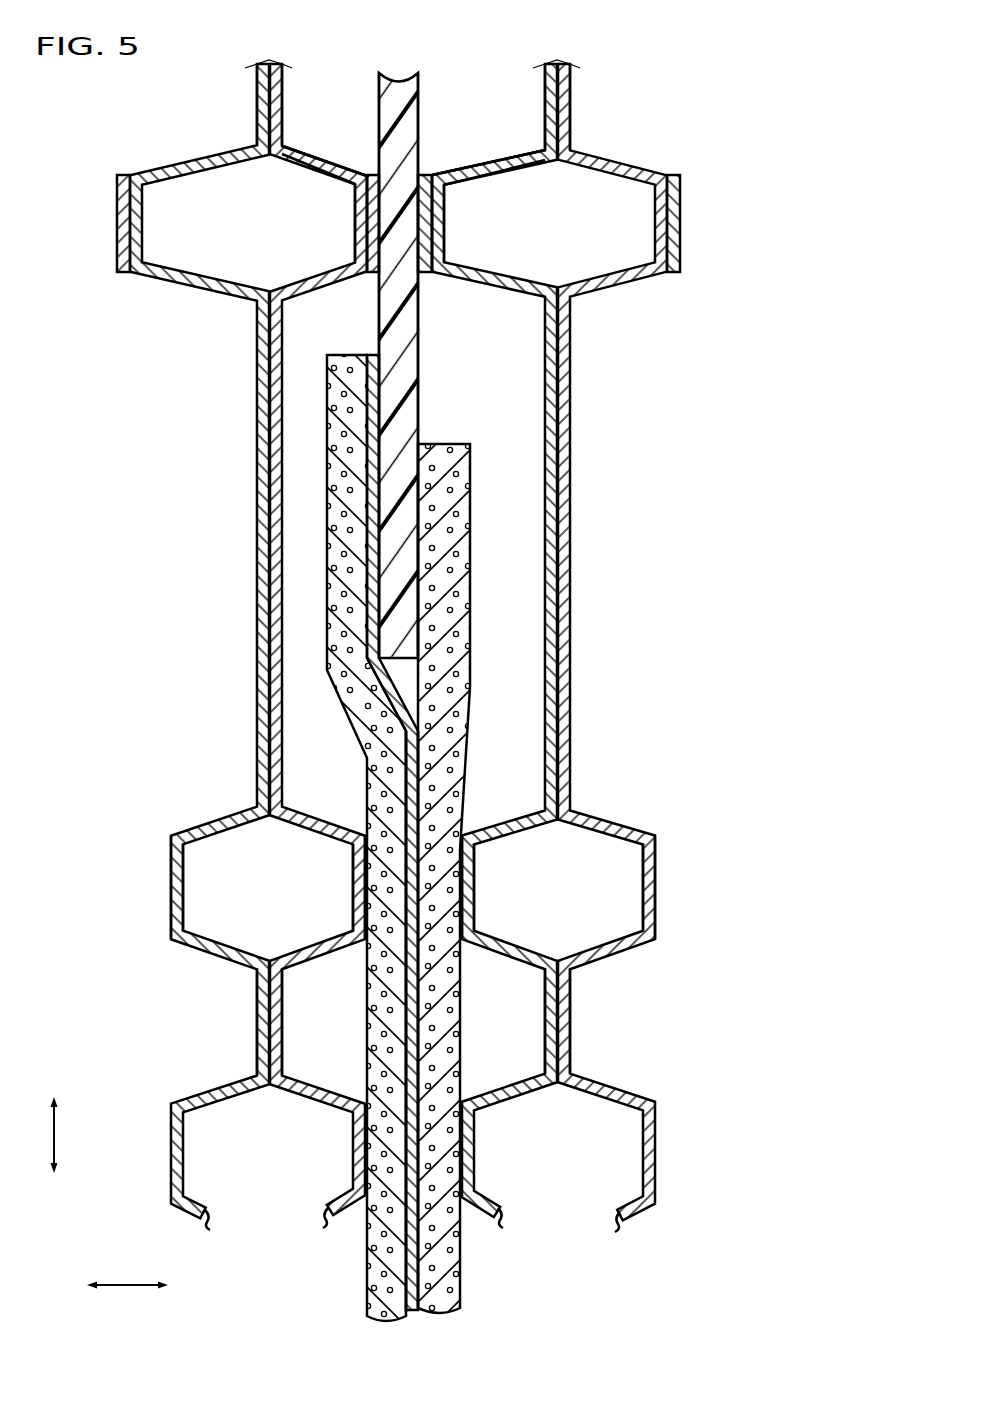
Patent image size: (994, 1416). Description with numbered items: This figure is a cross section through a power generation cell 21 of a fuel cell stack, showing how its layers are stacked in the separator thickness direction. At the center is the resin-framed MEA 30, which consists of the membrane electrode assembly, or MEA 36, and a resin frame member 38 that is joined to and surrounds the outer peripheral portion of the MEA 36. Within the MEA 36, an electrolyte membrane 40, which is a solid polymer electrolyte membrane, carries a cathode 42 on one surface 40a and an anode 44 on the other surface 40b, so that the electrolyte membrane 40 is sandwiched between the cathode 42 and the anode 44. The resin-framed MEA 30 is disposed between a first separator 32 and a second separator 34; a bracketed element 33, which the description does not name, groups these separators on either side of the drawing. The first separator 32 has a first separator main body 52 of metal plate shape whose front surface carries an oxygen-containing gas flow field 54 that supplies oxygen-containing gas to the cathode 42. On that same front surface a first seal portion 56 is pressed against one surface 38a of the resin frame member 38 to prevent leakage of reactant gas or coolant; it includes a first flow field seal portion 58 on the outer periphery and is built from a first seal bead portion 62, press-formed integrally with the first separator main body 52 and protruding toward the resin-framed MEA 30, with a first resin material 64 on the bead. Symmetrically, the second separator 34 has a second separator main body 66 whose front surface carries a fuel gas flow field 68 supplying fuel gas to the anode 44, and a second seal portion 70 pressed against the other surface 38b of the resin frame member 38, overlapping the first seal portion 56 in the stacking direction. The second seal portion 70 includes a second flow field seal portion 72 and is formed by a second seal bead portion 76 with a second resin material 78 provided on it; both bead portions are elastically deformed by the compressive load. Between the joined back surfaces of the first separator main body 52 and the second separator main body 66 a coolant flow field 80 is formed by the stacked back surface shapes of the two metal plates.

The power generation cell 21 is at (380, 47).
The resin-framed MEA 30 is at (398, 72).
The first separator 32 is at (233, 145).
The joined separator 33 is at (175, 68).
The second separator 34 is at (263, 100).
The membrane electrode assembly 36 is at (533, 1230).
The resin frame member 38 is at (407, 343).
The one surface of the resin frame member 38a is at (422, 382).
The other surface of the resin frame member 38b is at (378, 333).
The electrolyte membrane 40 is at (412, 1278).
The one surface of the electrolyte membrane 40a is at (420, 1158).
The other surface of the electrolyte membrane 40b is at (403, 1138).
The cathode 42 is at (443, 1298).
The anode 44 is at (387, 1255).
The first separator main body 52 is at (258, 85).
The oxygen-containing gas flow field 54 is at (532, 1005).
The first seal portion 56 is at (488, 162).
The first flow field seal portion 58 is at (460, 165).
The first seal bead portion 62 is at (482, 162).
The first resin material 64 is at (423, 220).
The second separator main body 66 is at (279, 82).
The fuel gas flow field 68 is at (295, 998).
The second seal portion 70 is at (294, 147).
The second flow field seal portion 72 is at (352, 93).
The second seal bead portion 76 is at (315, 160).
The second resin material 78 is at (370, 233).
The coolant flow field 80 is at (203, 913).